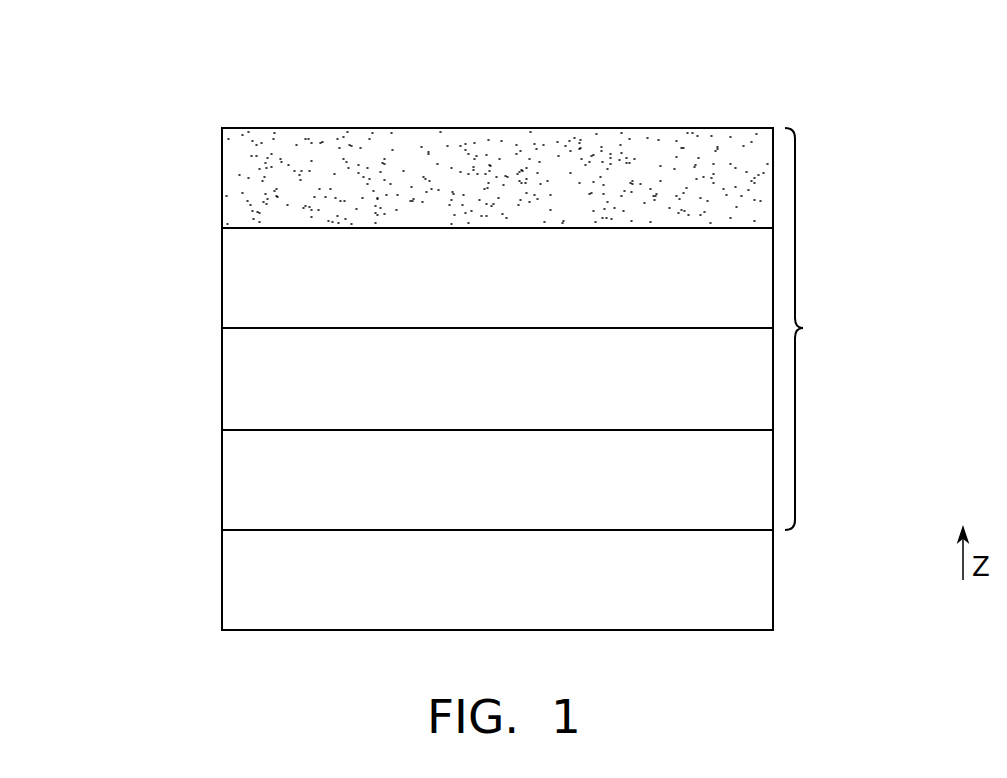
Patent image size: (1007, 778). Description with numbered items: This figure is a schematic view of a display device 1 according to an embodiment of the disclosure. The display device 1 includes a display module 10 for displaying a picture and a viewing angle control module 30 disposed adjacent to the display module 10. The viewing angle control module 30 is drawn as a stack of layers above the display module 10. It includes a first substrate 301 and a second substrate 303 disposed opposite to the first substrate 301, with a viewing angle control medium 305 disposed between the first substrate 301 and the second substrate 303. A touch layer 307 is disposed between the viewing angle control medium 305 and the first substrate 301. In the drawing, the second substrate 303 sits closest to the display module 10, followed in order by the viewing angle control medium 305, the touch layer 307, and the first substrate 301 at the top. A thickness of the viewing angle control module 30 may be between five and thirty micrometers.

The display device 1 is at (65, 63).
The display module 10 is at (243, 583).
The viewing angle control module 30 is at (812, 329).
The first substrate 301 is at (243, 183).
The second substrate 303 is at (243, 483).
The viewing angle control medium 305 is at (243, 383).
The touch layer 307 is at (243, 283).